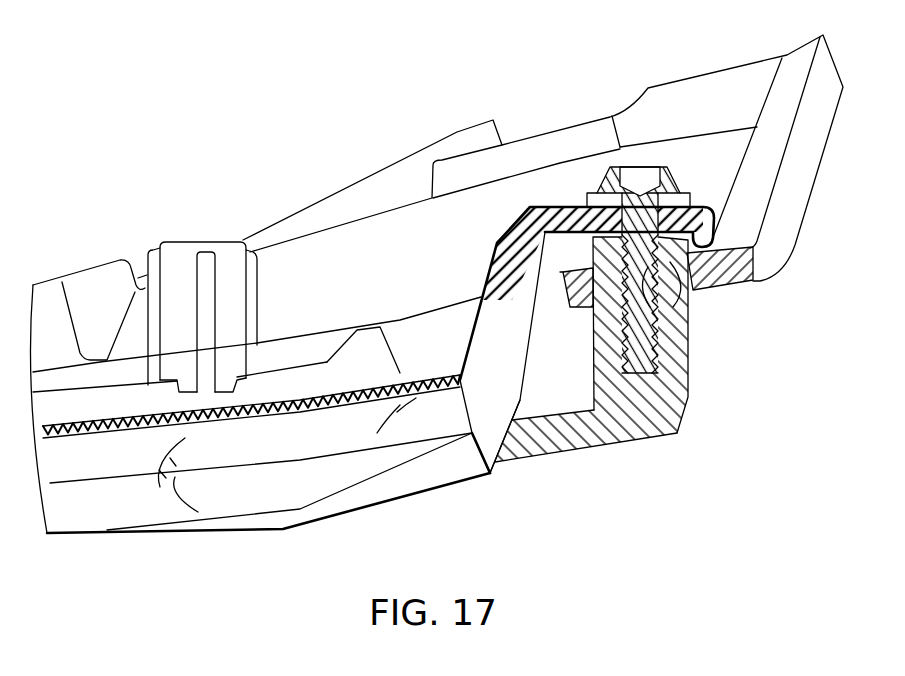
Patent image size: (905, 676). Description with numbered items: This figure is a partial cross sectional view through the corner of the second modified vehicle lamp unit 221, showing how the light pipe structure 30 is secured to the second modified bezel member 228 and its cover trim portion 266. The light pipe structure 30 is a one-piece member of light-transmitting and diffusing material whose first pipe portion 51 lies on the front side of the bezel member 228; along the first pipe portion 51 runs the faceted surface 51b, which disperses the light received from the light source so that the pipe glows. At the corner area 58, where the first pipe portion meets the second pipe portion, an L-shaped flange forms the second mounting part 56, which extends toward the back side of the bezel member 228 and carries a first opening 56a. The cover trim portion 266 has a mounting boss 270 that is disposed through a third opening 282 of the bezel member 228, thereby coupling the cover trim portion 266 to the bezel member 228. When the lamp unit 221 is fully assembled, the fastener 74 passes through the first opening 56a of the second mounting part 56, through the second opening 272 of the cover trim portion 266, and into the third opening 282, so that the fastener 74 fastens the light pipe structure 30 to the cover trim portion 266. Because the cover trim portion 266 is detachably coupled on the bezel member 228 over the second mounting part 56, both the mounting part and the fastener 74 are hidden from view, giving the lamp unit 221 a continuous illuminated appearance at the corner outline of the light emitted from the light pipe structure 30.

The vehicle lamp unit 221 is at (164, 159).
The bezel member 228 is at (55, 287).
The light pipe structure 30 is at (247, 534).
The faceted surface 51b is at (148, 417).
The first pipe portion 51 is at (293, 531).
The second mounting part 56 is at (507, 225).
The corner area 58 is at (495, 468).
The first opening 56a is at (668, 186).
The fastener 74 is at (652, 166).
The mounting boss 270 is at (690, 352).
The cover trim portion 266 is at (606, 448).
The second opening 272 is at (690, 259).
The third opening 282 is at (678, 300).